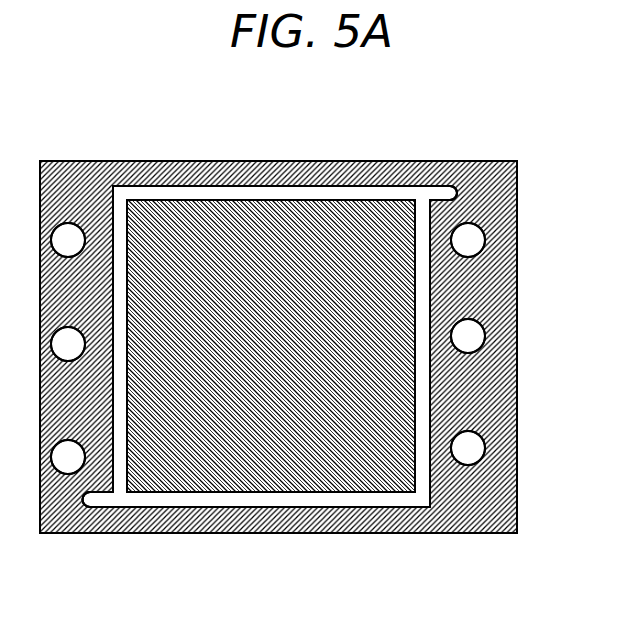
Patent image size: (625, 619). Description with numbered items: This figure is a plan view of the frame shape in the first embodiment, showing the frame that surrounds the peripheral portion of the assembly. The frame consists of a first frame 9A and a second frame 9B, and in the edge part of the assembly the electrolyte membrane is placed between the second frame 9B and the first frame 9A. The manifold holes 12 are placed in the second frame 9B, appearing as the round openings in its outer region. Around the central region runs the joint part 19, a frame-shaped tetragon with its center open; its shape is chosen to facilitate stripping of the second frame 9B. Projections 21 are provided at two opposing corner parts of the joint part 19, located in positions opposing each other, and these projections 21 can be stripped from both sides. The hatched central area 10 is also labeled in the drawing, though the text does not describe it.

The first frame 9A is at (247, 222).
The second frame 9B is at (197, 175).
The solder layer 10 is at (288, 242).
The manifold holes 12 is at (520, 378).
The joint part 19 is at (215, 498).
The projections 21 is at (452, 185).